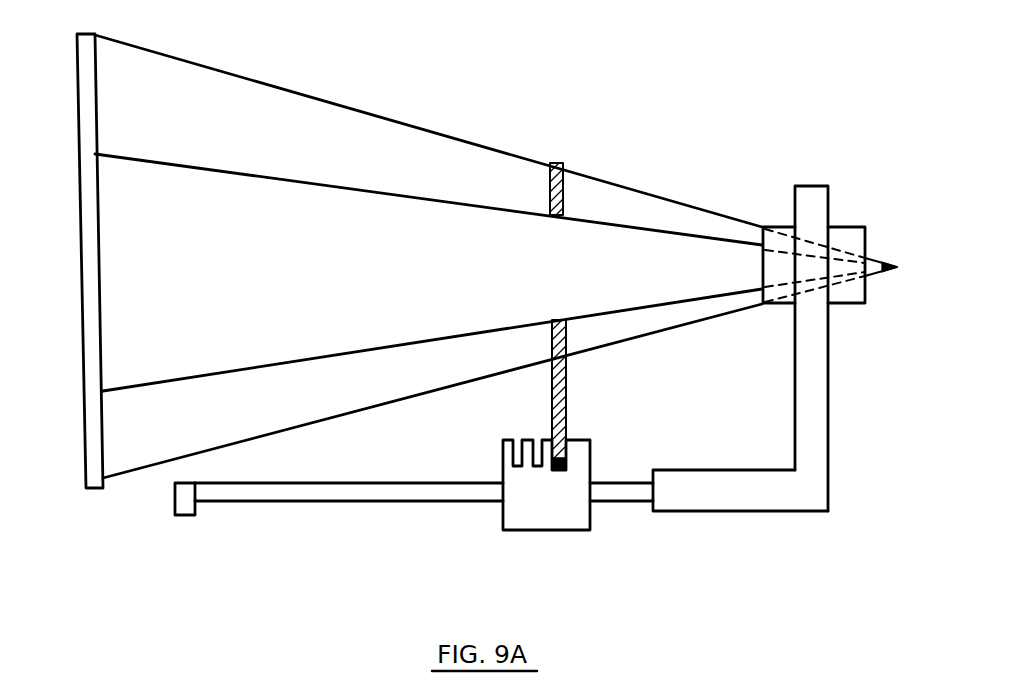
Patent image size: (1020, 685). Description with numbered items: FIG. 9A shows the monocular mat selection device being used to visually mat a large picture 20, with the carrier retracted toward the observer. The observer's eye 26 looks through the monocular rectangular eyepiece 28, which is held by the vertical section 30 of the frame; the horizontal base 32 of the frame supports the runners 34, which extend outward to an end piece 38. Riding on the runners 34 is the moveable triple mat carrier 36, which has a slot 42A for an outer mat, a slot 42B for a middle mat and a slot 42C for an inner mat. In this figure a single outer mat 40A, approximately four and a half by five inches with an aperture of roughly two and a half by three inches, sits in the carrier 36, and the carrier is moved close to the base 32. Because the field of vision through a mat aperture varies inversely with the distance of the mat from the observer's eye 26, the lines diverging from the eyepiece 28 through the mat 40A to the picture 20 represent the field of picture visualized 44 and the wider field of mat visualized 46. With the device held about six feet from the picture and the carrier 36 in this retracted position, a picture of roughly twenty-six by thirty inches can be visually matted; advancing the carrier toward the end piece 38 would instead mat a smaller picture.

The picture to be matted 20 is at (171, 258).
The observer's eye 26 is at (869, 301).
The monocular rectangular eyepiece 28 is at (819, 212).
The vertical section of frame supporting monocular eyepiece 30 is at (844, 348).
The horizontal base of frame supporting runners 32 is at (761, 512).
The runners 34 is at (424, 523).
The moveable triple mat carrier 36 is at (494, 520).
The end piece 38 is at (201, 522).
The outer mat 40A is at (614, 306).
The slot for outer mat 42A is at (619, 511).
The slot for middle mat 42B is at (610, 525).
The slot for inner mat 42C is at (601, 541).
The field of picture visualized 44 is at (261, 395).
The field of mat visualized 46 is at (428, 316).